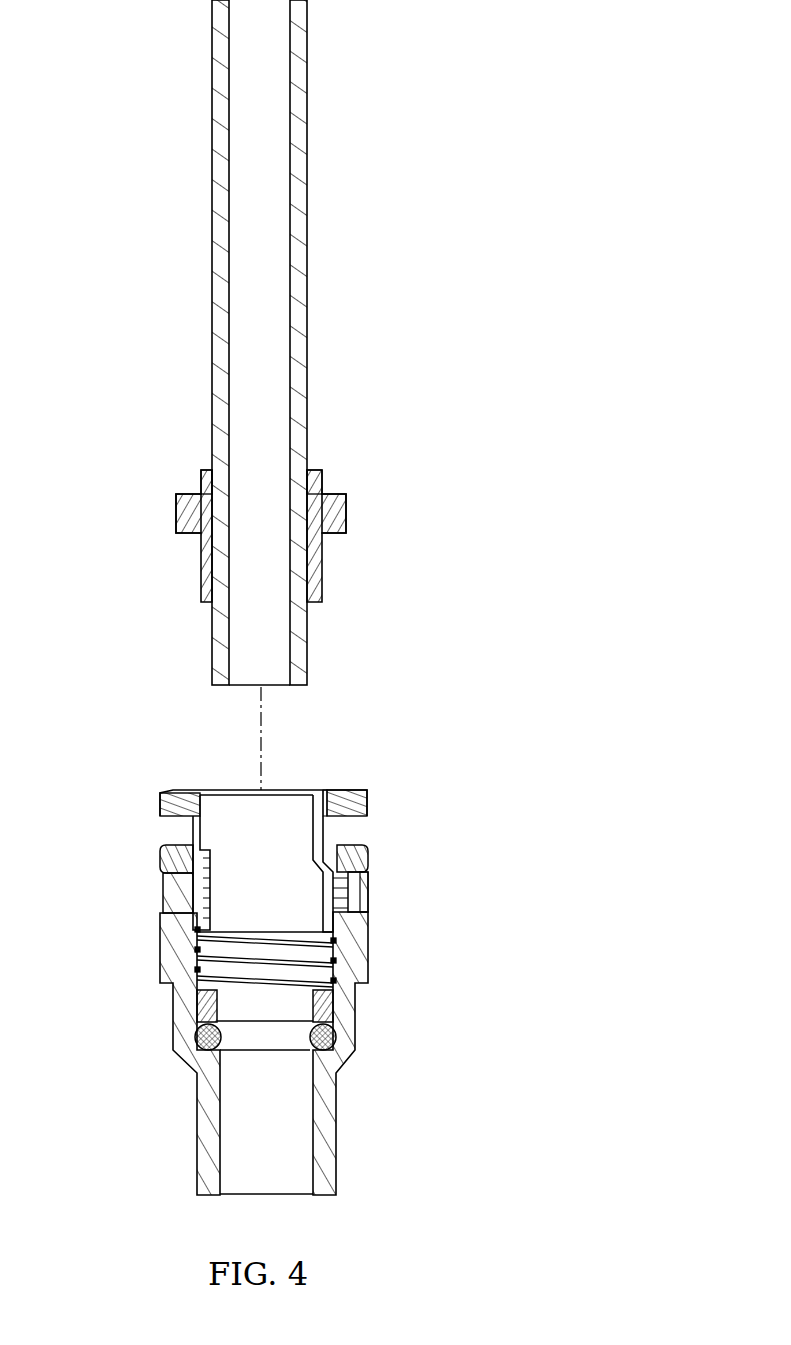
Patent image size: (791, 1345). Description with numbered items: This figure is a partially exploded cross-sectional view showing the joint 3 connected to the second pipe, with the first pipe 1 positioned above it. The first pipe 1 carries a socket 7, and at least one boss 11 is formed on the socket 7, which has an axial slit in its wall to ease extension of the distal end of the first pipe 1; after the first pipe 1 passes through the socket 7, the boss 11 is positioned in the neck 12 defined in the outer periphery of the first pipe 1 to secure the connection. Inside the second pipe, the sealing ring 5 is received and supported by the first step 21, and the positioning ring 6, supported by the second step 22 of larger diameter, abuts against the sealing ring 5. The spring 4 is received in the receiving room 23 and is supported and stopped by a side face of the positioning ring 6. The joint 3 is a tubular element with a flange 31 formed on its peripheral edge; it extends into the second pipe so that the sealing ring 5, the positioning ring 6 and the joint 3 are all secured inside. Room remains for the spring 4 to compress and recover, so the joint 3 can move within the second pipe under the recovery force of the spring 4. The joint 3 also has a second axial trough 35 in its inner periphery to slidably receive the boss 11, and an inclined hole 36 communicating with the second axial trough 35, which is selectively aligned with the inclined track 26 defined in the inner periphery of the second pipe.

The first pipe 1 is at (298, 334).
The socket 7 is at (316, 570).
The boss 11 is at (343, 522).
The neck 12 is at (345, 503).
The joint 3 is at (228, 794).
The flange 31 is at (367, 803).
The second axial trough 35 is at (322, 808).
The inclined hole 36 is at (207, 872).
The inclined track 26 is at (180, 893).
The receiving room 23 is at (203, 953).
The first step 21 is at (356, 1010).
The spring 4 is at (334, 950).
The second step 22 is at (197, 998).
The positioning ring 6 is at (200, 1013).
The sealing ring 5 is at (336, 1028).